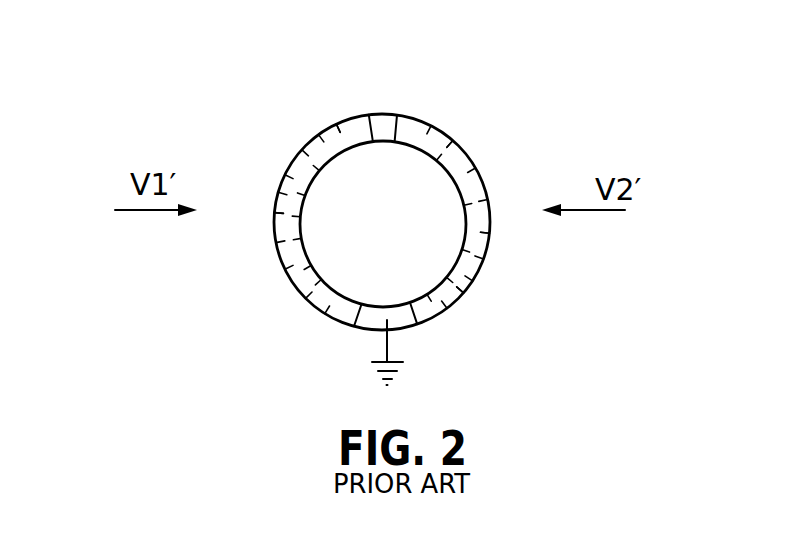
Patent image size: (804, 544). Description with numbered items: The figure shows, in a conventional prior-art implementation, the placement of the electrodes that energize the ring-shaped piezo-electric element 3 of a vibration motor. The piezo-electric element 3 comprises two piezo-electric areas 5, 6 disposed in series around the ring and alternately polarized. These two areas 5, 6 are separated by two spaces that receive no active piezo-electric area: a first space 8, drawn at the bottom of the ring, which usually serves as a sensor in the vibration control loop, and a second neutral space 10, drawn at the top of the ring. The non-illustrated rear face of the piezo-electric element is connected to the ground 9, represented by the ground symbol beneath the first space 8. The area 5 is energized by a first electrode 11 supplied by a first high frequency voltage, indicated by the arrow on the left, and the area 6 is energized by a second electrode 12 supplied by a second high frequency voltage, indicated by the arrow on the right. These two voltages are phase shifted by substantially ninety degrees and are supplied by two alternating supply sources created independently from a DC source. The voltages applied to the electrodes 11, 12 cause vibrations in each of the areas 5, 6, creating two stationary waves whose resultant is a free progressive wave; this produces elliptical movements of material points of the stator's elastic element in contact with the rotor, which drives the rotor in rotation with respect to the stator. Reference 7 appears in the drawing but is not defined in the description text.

The piezo-electric element 3 is at (312, 147).
The piezo-electric area 5 is at (335, 125).
The piezo-electric area 6 is at (452, 148).
The electrode segment 7 is at (463, 288).
The first space 8 is at (365, 320).
The ground 9 is at (388, 343).
The second neutral space 10 is at (383, 125).
The first electrode 11 is at (285, 221).
The second electrode 12 is at (475, 230).